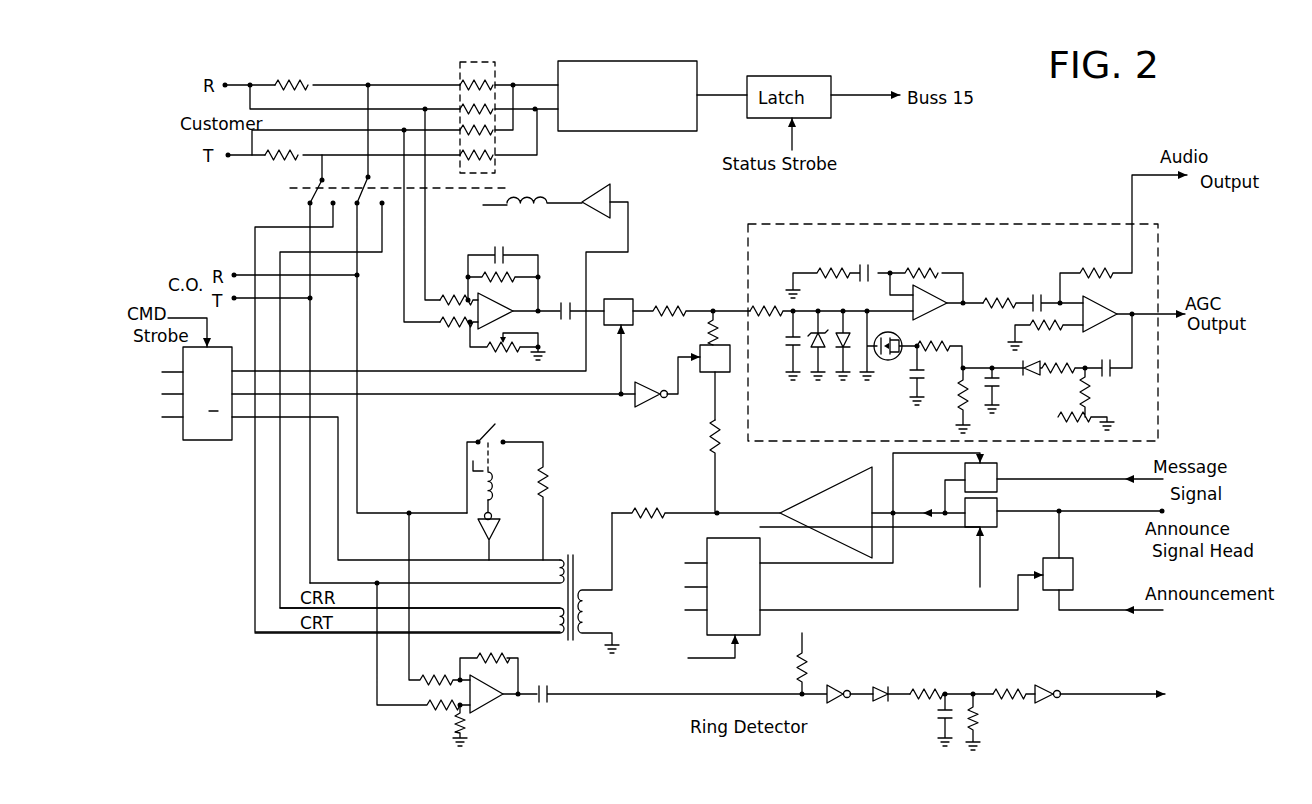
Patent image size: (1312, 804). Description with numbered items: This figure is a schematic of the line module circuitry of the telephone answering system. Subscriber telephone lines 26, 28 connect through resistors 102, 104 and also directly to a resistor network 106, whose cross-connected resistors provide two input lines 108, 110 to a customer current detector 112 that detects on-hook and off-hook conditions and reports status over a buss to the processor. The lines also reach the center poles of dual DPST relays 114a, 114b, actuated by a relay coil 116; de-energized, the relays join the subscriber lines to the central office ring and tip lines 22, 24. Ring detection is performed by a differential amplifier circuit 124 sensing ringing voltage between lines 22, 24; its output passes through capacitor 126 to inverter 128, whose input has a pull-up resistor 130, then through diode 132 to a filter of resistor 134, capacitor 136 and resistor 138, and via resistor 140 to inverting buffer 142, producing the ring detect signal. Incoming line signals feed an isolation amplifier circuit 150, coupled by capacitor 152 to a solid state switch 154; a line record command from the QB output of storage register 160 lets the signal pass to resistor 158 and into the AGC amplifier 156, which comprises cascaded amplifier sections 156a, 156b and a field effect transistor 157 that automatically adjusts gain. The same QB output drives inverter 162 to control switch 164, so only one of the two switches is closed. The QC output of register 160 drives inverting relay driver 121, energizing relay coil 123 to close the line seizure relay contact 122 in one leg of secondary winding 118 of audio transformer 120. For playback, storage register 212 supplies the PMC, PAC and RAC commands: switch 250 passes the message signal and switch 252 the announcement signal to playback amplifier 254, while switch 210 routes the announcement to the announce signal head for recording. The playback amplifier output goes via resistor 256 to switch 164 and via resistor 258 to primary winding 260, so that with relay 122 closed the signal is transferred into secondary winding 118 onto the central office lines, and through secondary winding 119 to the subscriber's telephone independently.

The subscriber telephone line 26 is at (243, 80).
The subscriber telephone line 28 is at (241, 160).
The resistor 102 is at (297, 72).
The resistor 104 is at (312, 142).
The resistor network 106 is at (495, 63).
The input line 108 is at (538, 73).
The input line 110 is at (538, 116).
The customer current detector 112 is at (697, 47).
The DPST relay 114a is at (312, 186).
The DPST relay 114b is at (360, 184).
The relay coil 116 is at (546, 194).
The central office ring line 22 is at (242, 267).
The central office tip line 24 is at (237, 302).
The isolation amplifier circuit 150 is at (540, 275).
The capacitor 152 is at (563, 314).
The solid state switch 154 is at (625, 327).
The resistor 158 is at (662, 299).
The AGC amplifier 156 is at (967, 308).
The amplifier section 156a is at (932, 266).
The amplifier section 156b is at (1107, 259).
The field effect transistor 157 is at (903, 338).
The storage register 160 is at (205, 442).
The inverter 162 is at (653, 409).
The switch 164 is at (728, 375).
The line seizure relay contact 122 is at (485, 427).
The relay coil 123 is at (505, 464).
The inverting relay driver 121 is at (498, 523).
The secondary winding 118 is at (548, 558).
The secondary winding 119 is at (555, 636).
The audio transformer 120 is at (593, 581).
The primary winding 260 is at (593, 597).
The resistor 256 is at (710, 430).
The resistor 258 is at (642, 506).
The playback amplifier 254 is at (833, 485).
The storage register 212 is at (733, 540).
The switch 250 is at (1000, 472).
The switch 252 is at (1003, 505).
The switch 210 is at (1075, 575).
The differential amplifier circuit 124 is at (485, 709).
The capacitor 126 is at (550, 708).
The pull-up resistor 130 is at (808, 653).
The inverter 128 is at (835, 682).
The diode 132 is at (883, 682).
The resistor 134 is at (933, 682).
The capacitor 136 is at (938, 719).
The resistor 138 is at (993, 720).
The resistor 140 is at (1007, 682).
The inverting buffer 142 is at (1052, 682).